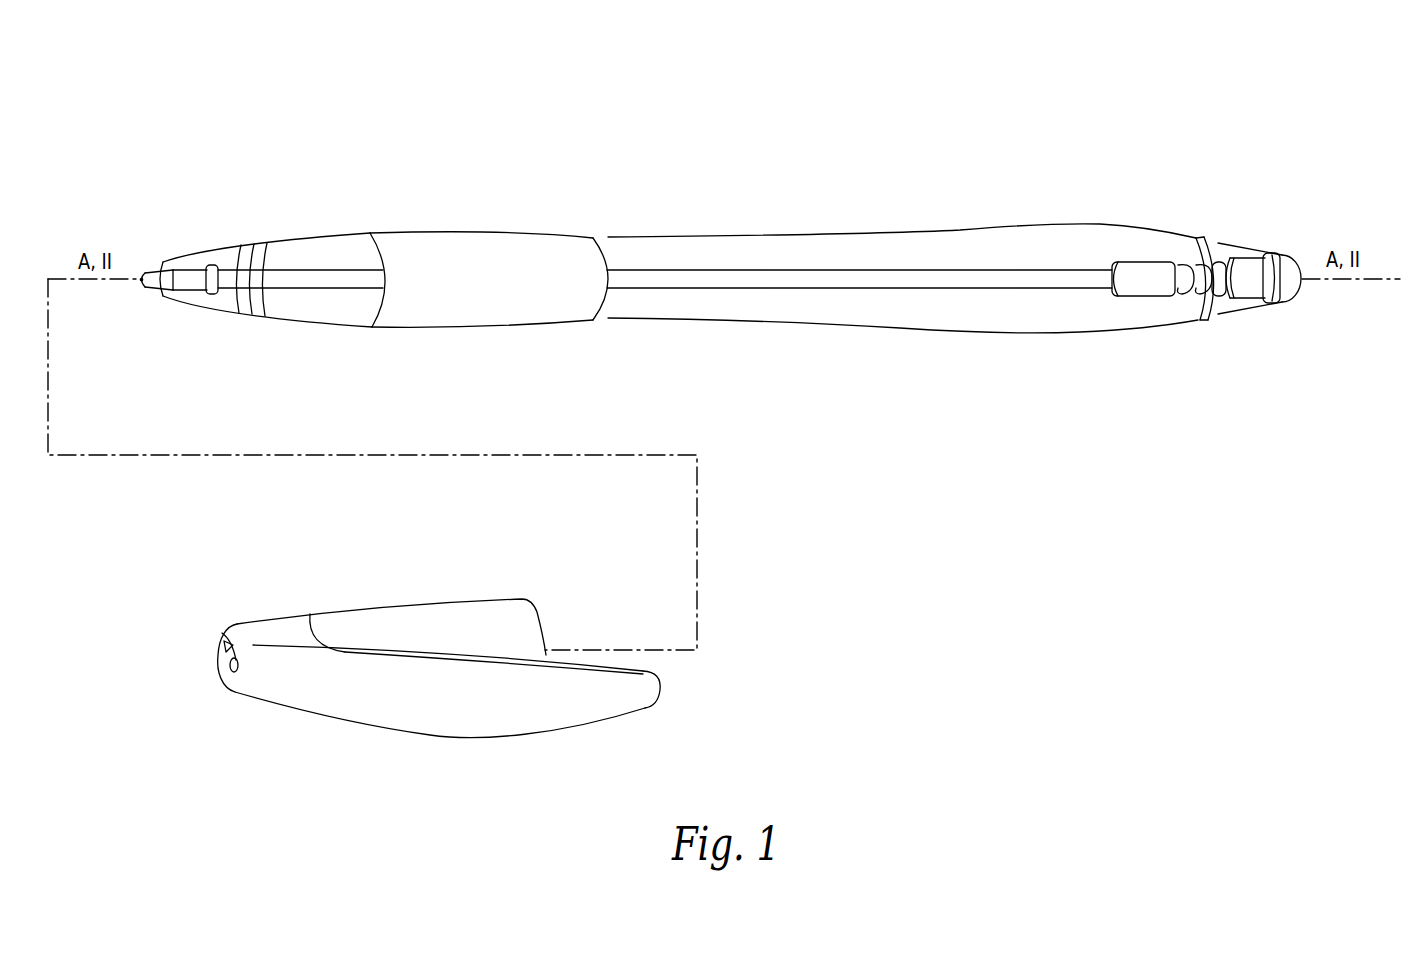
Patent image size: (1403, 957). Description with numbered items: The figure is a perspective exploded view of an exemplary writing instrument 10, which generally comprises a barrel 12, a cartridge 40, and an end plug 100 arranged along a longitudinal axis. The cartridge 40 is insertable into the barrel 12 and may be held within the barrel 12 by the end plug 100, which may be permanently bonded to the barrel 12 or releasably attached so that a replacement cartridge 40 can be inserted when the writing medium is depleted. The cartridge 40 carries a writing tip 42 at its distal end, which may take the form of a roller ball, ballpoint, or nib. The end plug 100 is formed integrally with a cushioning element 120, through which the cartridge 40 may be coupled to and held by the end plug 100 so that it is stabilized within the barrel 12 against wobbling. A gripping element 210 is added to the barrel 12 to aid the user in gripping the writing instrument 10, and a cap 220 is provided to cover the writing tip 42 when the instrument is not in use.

The writing instrument 10 is at (768, 176).
The barrel 12 is at (957, 229).
The cartridge 40 is at (895, 297).
The writing tip 42 is at (150, 271).
The end plug 100 is at (1282, 256).
The cushioning element 120 is at (1197, 239).
The gripping element 210 is at (452, 232).
The cap 220 is at (437, 598).